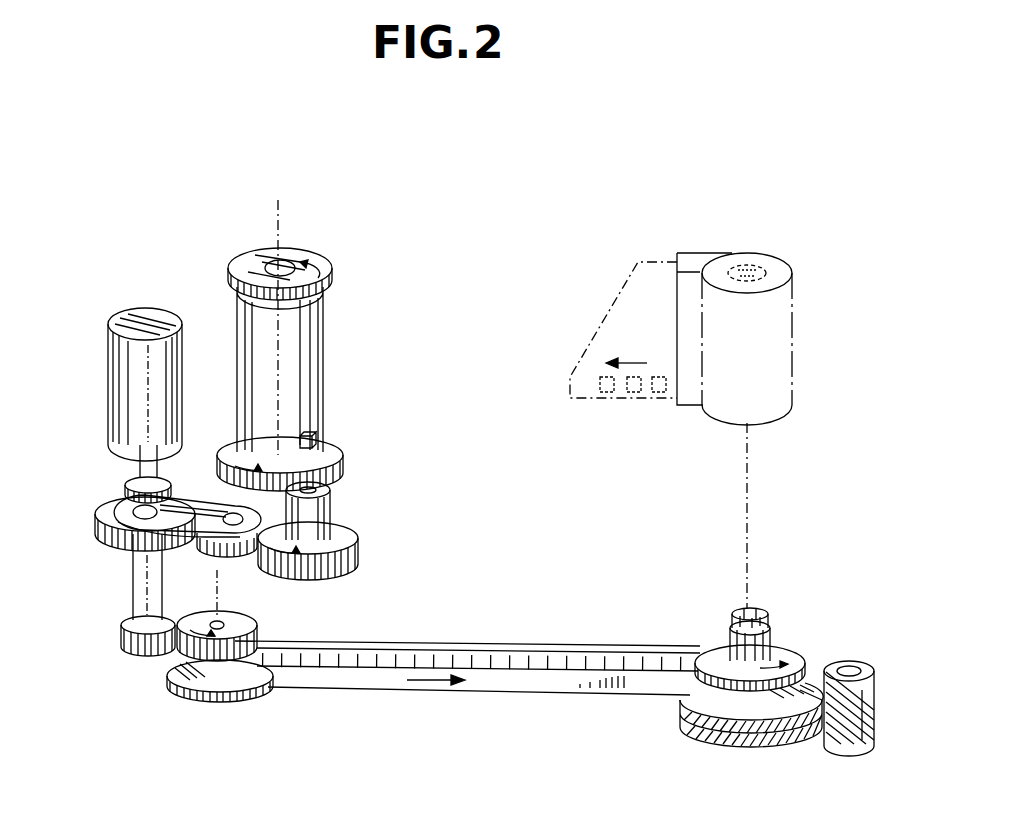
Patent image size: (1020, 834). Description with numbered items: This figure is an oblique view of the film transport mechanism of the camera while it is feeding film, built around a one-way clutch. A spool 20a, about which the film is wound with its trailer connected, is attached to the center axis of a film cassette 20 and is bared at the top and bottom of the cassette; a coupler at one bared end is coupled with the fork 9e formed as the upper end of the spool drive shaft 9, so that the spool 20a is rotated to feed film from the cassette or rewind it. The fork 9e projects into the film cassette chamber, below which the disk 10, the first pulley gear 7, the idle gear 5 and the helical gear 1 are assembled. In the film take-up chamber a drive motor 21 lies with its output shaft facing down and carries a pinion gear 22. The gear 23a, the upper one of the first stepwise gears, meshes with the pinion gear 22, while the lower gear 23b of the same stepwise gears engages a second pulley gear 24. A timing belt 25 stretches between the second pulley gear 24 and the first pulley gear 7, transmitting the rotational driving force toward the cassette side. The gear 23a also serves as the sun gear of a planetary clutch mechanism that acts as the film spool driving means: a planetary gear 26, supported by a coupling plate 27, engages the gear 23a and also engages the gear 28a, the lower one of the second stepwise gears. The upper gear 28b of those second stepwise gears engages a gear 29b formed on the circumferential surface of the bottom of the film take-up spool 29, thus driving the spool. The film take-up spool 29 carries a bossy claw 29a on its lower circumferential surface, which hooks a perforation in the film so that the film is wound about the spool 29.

The helical gear 1 is at (730, 745).
The idle gear 5 is at (877, 660).
The first pulley gear 7 is at (807, 688).
The spool drive shaft 9 is at (717, 648).
The fork 9e is at (770, 622).
The disk 10 is at (797, 647).
The film cassette 20 is at (760, 398).
The spool 20a is at (757, 263).
The drive motor 21 is at (145, 317).
The pinion gear 22 is at (135, 475).
The gear (upper first stepwise gear) 23a is at (105, 506).
The gear (lower first stepwise gear) 23b is at (150, 652).
The second pulley gear 24 is at (208, 690).
The timing belt 25 is at (525, 680).
The planetary gear 26 is at (237, 550).
The coupling plate 27 is at (196, 515).
The gear (lower second stepwise gear) 28a is at (360, 537).
The gear (upper second stepwise gear) 28b is at (332, 512).
The film take-up spool 29 is at (288, 252).
The claw 29a is at (307, 442).
The gear 29b is at (310, 470).